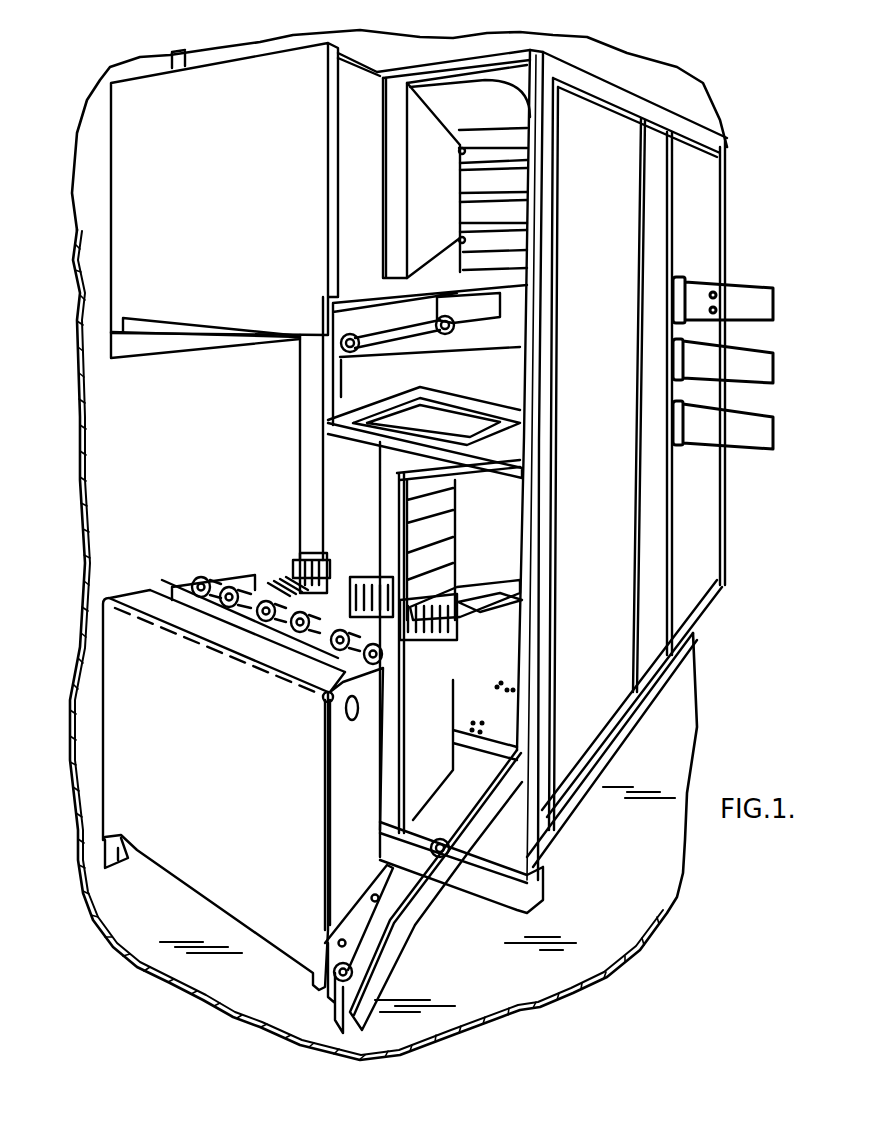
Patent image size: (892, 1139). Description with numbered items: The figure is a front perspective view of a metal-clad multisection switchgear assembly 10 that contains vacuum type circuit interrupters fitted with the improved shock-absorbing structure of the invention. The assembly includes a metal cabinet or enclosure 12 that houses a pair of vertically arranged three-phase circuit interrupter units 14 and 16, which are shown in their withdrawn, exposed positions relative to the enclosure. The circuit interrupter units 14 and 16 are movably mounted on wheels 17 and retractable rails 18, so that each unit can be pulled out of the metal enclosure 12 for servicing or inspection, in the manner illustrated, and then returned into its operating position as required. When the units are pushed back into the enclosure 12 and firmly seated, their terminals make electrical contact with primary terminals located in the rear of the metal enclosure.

The metal-clad switchgear assembly 10 is at (765, 258).
The metal cabinet or enclosure 12 is at (603, 431).
The circuit interrupter unit 14 is at (228, 222).
The circuit interrupter unit 16 is at (235, 785).
The wheels 17 is at (445, 333).
The retractable rails 18 is at (152, 350).